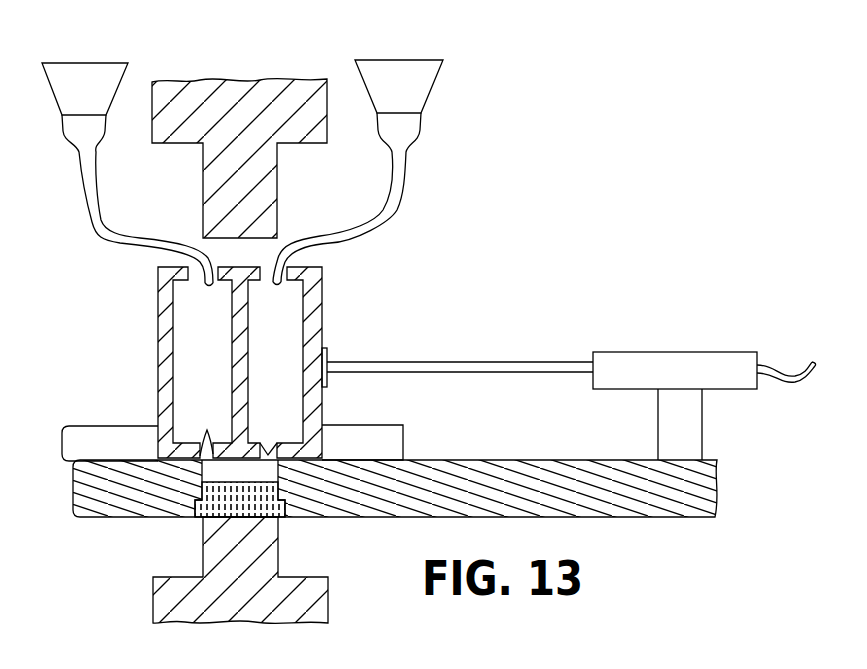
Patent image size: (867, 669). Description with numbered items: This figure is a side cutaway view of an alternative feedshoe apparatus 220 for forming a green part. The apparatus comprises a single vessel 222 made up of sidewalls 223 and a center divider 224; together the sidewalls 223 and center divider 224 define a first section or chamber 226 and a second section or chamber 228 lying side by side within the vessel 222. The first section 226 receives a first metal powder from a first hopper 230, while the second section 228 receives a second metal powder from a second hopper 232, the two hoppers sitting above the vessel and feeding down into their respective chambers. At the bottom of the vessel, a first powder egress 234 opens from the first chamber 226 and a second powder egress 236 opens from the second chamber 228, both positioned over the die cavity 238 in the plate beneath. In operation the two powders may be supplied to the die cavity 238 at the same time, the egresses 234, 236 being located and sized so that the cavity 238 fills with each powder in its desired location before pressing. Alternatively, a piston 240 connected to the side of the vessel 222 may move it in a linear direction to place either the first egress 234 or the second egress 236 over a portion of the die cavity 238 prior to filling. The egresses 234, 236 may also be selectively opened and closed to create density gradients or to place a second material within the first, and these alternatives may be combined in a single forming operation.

The valve assembly 220 is at (351, 298).
The vessel 222 is at (226, 346).
The sidewalls 223 is at (158, 287).
The center divider 224 is at (240, 352).
The first section or chamber 226 is at (192, 318).
The second section or chamber 228 is at (265, 395).
The first hopper 230 is at (78, 80).
The second hopper 232 is at (397, 72).
The first powder egress 234 is at (210, 430).
The second powder egress 236 is at (268, 455).
The die cavity 238 is at (283, 482).
The piston 240 is at (465, 360).